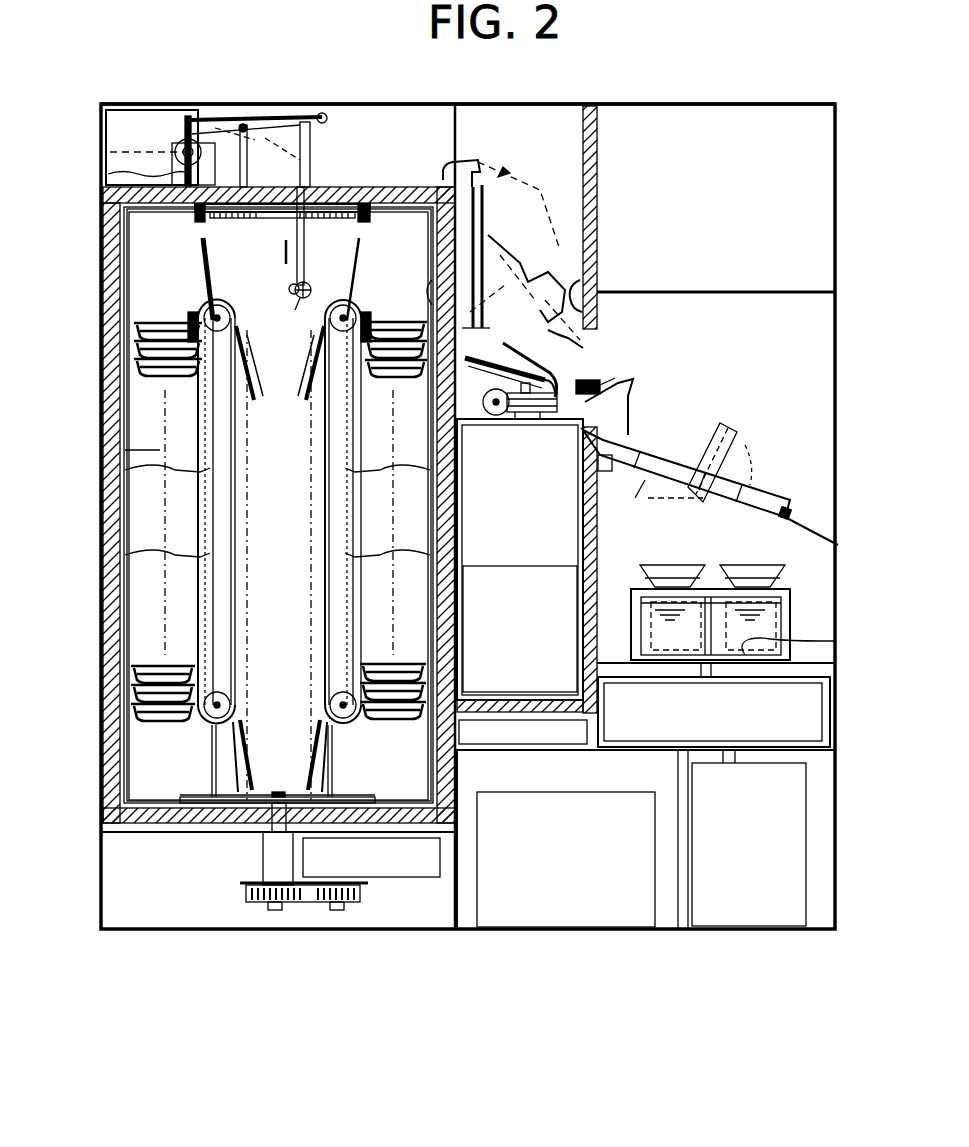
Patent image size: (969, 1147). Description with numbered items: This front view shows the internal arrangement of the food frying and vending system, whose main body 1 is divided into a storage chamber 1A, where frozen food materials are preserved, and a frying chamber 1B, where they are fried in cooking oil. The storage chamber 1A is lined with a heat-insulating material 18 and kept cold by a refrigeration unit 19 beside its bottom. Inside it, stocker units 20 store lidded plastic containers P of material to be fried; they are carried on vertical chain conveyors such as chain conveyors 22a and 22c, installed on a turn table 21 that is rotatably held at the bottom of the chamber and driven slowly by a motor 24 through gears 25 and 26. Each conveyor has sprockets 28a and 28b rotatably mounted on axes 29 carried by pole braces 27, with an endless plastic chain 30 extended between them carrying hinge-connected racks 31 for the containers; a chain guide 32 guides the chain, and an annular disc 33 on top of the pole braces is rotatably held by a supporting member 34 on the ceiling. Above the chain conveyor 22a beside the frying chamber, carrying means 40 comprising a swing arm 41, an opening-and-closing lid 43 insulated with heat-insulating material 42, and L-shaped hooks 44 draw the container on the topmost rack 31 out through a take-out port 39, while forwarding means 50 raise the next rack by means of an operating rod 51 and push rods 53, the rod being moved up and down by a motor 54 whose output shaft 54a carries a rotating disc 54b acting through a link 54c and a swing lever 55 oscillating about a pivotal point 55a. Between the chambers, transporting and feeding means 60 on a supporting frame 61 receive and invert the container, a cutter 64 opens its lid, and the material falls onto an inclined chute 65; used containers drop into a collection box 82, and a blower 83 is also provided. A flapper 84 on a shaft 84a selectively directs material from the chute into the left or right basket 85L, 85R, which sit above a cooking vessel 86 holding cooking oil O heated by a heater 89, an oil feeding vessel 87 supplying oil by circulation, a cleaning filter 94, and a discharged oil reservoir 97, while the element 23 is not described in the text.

The main body 1 is at (183, 106).
The storage chamber 1A is at (135, 241).
The frying chamber 1B is at (813, 356).
The heat-insulating material 18 is at (105, 520).
The refrigeration unit 19 is at (540, 918).
The stocker unit 20 is at (128, 308).
The turn table 21 is at (196, 796).
The chain conveyor 22a is at (483, 455).
The chain conveyor 22c is at (135, 453).
The drive shaft 23 is at (267, 808).
The motor 24 is at (405, 868).
The gear 25 is at (347, 907).
The gear 26 is at (260, 900).
The pole brace 27 is at (213, 746).
The sprocket 28a is at (320, 360).
The sprocket 28b is at (321, 697).
The axis 29 is at (202, 304).
The endless chain 30 is at (213, 477).
The rack 31 is at (140, 365).
The chain guide 32 is at (214, 542).
The annular disc 33 is at (354, 224).
The supporting member 34 is at (353, 196).
The take-out port 39 is at (432, 280).
The carrying means 40 is at (488, 222).
The swing arm 41 is at (505, 169).
The heat-insulating material 42 is at (410, 262).
The opening-and-closing lid 43 is at (475, 281).
The hook 44 is at (413, 290).
The forwarding means 50 is at (284, 266).
The operating rod 51 is at (297, 238).
The push rod 53 is at (296, 298).
The motor 54 is at (168, 112).
The output shaft 54a is at (105, 159).
The rotating disc 54b is at (105, 183).
The link 54c is at (177, 151).
The swing lever 55 is at (282, 115).
The pivotal point 55a is at (243, 125).
The transporting and feeding means 60 is at (544, 450).
The supporting frame 61 is at (492, 420).
The cutter 64 is at (596, 380).
The inclined chute 65 is at (640, 442).
The collection box 82 is at (495, 565).
The blower 83 is at (592, 279).
The flapper 84 is at (645, 481).
The shaft 84a is at (690, 447).
The left basket 85L is at (679, 584).
The right basket 85R is at (748, 586).
The cooking vessel 86 is at (791, 607).
The oil feeding vessel 87 is at (791, 710).
The heater 89 is at (813, 648).
The cleaning filter 94 is at (660, 683).
The discharged oil reservoir 97 is at (793, 828).
The cooking oil O is at (652, 628).
The plastic container P is at (128, 332).